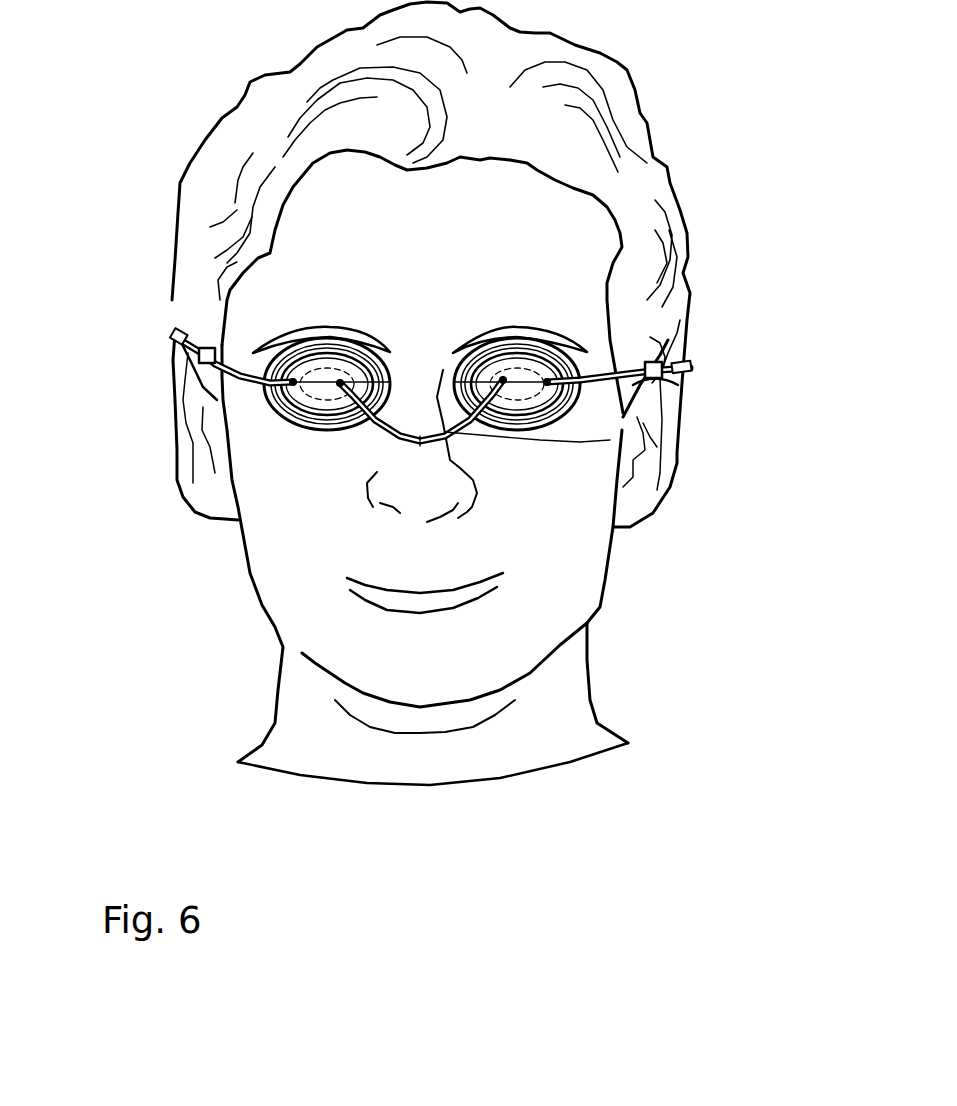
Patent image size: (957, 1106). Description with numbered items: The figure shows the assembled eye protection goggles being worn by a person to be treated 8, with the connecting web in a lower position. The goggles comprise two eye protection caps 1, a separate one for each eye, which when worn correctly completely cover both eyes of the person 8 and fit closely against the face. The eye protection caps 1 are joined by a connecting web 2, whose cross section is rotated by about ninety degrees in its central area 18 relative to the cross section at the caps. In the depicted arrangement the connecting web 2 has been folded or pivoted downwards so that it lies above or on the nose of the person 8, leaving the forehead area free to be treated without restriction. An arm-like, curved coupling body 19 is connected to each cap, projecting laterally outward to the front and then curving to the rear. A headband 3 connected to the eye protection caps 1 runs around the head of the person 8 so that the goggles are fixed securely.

The eye protection cap 1 is at (257, 371).
The connecting web 2 is at (379, 431).
The headband 3 is at (693, 363).
The person to be treated 8 is at (587, 265).
The central area 18 is at (610, 440).
The coupling body 19 is at (241, 386).